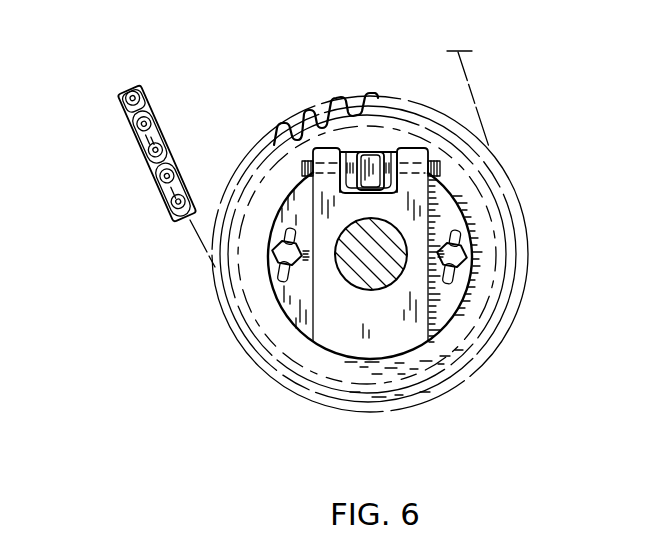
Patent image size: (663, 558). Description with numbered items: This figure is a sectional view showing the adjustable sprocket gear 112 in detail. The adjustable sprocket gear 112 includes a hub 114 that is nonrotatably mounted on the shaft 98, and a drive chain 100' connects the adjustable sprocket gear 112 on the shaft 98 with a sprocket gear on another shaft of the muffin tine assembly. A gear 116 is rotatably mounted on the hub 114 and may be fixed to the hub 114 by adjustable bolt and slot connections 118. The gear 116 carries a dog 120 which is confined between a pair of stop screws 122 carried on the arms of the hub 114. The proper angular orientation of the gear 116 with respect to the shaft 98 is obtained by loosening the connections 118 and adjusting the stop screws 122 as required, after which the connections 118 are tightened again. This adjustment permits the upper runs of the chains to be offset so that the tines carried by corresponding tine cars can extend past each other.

The shaft 98 is at (350, 296).
The drive chain 100' is at (122, 176).
The adjustable sprocket gear 112 is at (327, 91).
The hub 114 is at (377, 336).
The gear 116 is at (487, 307).
The adjustable bolt and slot connections 118 is at (275, 255).
The dog 120 is at (372, 157).
The stop screws 122 is at (304, 164).